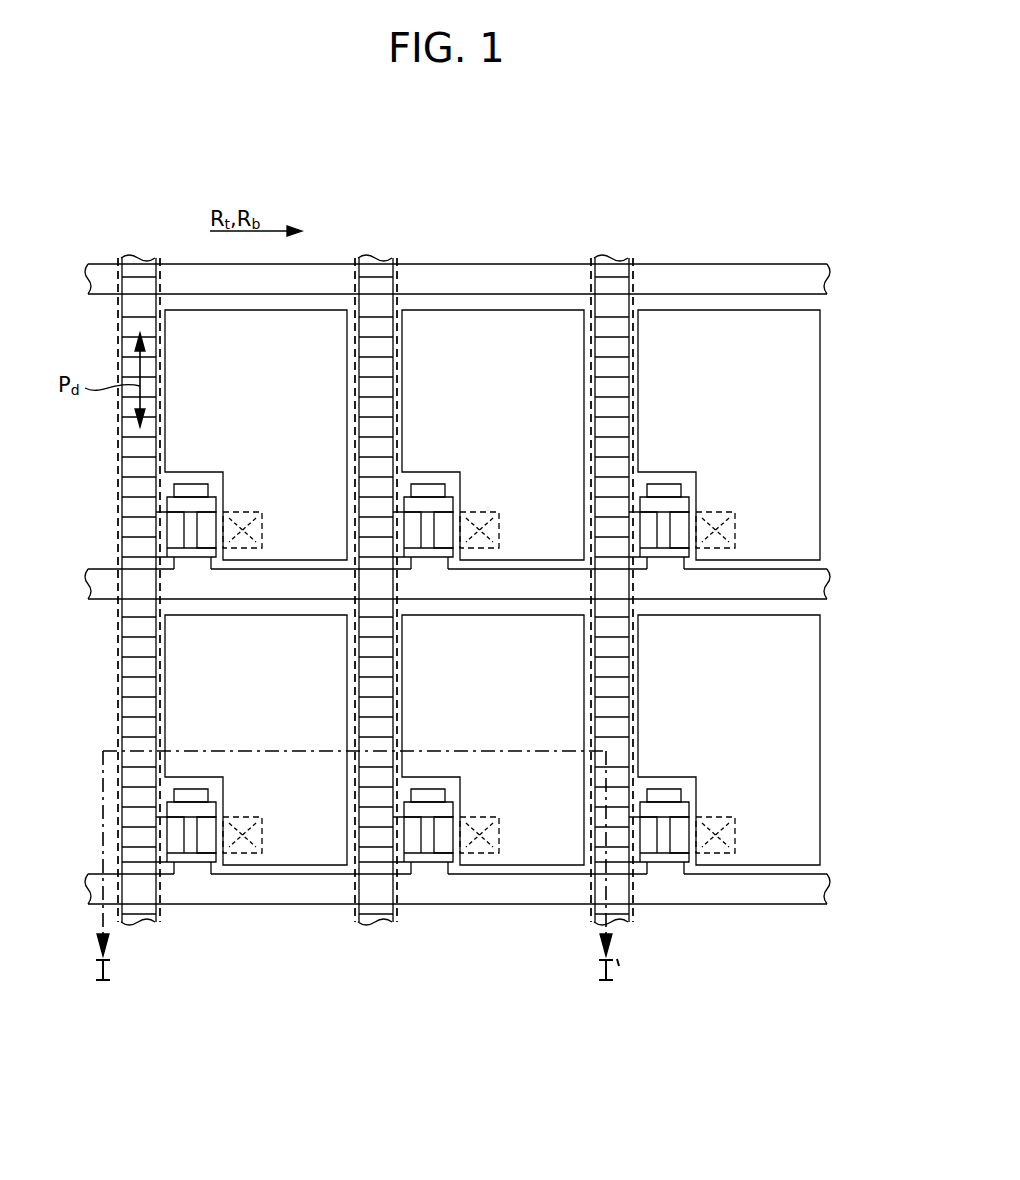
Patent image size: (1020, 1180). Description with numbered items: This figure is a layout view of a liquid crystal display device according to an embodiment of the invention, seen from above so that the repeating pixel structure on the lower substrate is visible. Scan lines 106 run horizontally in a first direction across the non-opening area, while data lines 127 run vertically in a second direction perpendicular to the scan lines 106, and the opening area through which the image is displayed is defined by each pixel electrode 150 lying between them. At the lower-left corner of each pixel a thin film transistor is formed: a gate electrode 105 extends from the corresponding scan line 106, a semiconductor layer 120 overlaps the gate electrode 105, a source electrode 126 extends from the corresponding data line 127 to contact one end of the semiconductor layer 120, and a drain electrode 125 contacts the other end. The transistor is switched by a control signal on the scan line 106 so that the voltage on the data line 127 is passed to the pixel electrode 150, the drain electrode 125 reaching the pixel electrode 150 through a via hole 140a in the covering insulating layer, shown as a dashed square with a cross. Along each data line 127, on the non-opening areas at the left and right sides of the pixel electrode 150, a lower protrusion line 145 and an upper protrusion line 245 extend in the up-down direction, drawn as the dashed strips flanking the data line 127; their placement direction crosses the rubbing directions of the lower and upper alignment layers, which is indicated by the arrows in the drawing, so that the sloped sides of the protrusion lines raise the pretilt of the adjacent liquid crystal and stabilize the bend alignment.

The gate electrode 105 is at (662, 796).
The scan line 106 is at (807, 892).
The semiconductor layer 120 is at (670, 812).
The drain electrode 125 is at (678, 848).
The source electrode 126 is at (643, 846).
The data line 127 is at (615, 928).
The via hole 140a is at (731, 835).
The lower protrusion line 145 is at (375, 590).
The pixel electrode 150 is at (782, 712).
The upper protrusion line 245 is at (592, 893).